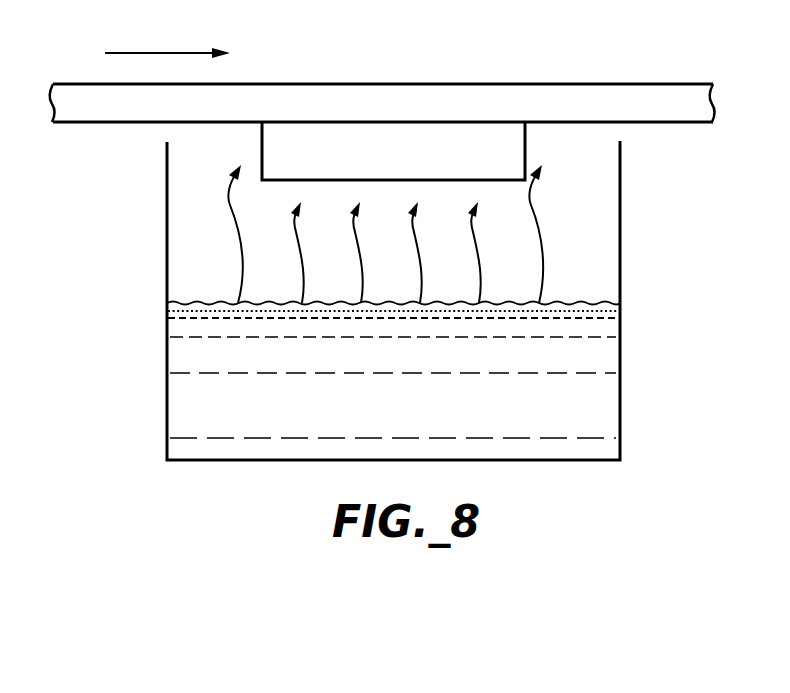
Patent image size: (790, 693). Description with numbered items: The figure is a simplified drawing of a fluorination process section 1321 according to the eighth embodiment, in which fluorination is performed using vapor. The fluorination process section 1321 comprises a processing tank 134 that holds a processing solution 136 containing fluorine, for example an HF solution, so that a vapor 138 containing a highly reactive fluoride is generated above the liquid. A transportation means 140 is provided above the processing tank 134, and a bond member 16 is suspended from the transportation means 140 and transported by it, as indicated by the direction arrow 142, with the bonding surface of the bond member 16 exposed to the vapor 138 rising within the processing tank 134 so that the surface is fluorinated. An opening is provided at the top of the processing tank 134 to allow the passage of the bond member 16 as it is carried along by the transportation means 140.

The bond member 16 is at (365, 135).
The processing tank 134 is at (167, 431).
The processing solution 136 is at (612, 421).
The vapor 138 is at (540, 239).
The transportation means 140 is at (561, 83).
The web travel direction 142 is at (185, 52).
The fluorination process section 1321 is at (147, 273).